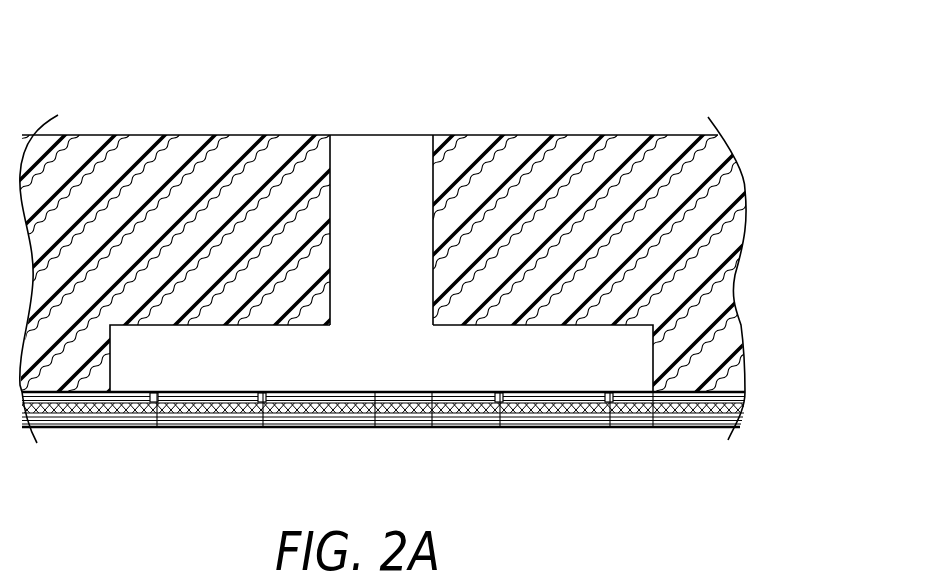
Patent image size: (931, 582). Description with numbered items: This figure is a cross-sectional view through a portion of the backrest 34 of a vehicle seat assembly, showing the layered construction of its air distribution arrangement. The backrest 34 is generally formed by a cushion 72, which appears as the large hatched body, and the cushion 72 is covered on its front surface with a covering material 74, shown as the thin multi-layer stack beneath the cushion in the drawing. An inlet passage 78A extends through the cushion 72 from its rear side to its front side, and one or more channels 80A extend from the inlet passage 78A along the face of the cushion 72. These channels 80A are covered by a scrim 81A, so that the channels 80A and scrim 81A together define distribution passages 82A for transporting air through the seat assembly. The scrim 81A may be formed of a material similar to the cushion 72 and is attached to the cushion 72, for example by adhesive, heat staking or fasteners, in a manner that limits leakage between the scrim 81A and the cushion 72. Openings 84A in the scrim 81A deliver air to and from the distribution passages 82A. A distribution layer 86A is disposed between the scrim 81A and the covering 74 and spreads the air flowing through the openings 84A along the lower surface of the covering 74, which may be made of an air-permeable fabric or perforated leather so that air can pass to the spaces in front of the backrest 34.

The backrest 34 is at (157, 78).
The cushion 72 is at (592, 183).
The covering material 74 is at (681, 428).
The inlet passage 78A is at (448, 188).
The channels 80A is at (648, 322).
The scrim 81A is at (430, 428).
The distribution passages 82A is at (246, 372).
The openings 84A is at (610, 428).
The distribution layer 86A is at (375, 428).